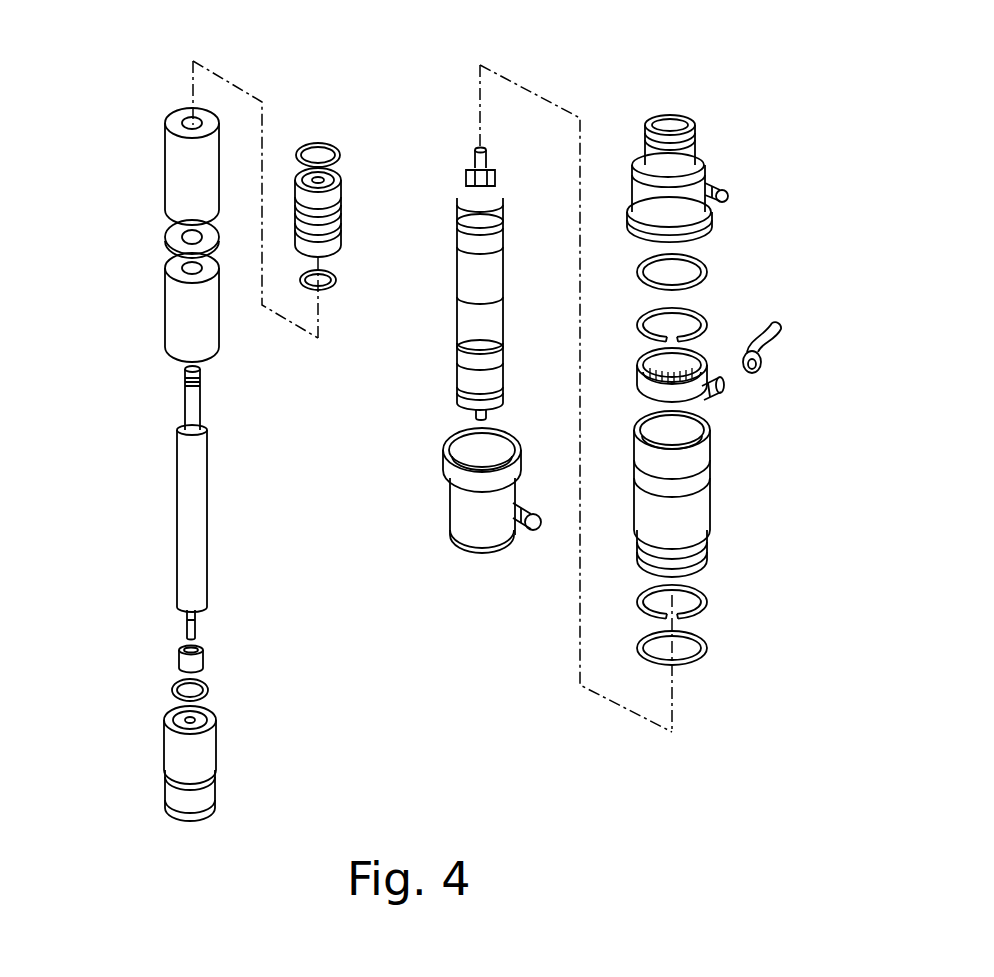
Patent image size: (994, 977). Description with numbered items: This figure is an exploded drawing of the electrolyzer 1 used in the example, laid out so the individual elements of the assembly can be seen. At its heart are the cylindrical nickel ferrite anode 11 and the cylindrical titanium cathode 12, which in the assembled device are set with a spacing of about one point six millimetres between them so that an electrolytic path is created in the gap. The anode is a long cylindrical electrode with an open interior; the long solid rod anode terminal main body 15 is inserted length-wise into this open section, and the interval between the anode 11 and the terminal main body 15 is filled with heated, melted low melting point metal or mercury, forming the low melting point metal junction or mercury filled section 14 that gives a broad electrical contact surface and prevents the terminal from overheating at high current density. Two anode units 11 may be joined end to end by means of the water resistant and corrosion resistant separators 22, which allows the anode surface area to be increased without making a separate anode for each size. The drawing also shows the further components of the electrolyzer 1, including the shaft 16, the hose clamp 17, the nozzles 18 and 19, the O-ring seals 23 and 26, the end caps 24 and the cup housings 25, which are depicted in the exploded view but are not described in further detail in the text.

The electrolyzer 1 is at (205, 657).
The cylindrical nickel ferrite anode 11 is at (167, 177).
The cylindrical titanium cathode 12 is at (455, 290).
The low melting point metal junction or mercury filled section 14 is at (188, 117).
The anode terminal main body 15 is at (177, 487).
The shaft 16 is at (200, 408).
The hose clamp 17 is at (710, 355).
The nozzle 18 is at (533, 530).
The nozzle 19 is at (724, 197).
The separators 22 is at (165, 237).
The O-ring seal 23 is at (322, 143).
The end cap 24 is at (165, 752).
The cup housing 25 is at (448, 522).
The O-ring seal 26 is at (172, 686).